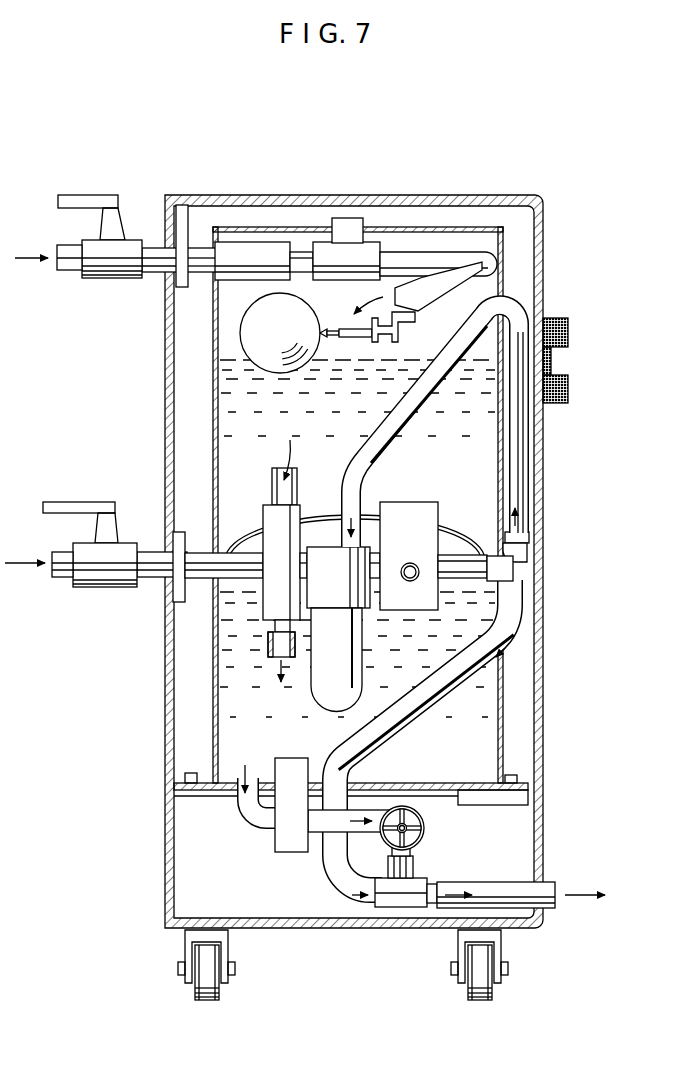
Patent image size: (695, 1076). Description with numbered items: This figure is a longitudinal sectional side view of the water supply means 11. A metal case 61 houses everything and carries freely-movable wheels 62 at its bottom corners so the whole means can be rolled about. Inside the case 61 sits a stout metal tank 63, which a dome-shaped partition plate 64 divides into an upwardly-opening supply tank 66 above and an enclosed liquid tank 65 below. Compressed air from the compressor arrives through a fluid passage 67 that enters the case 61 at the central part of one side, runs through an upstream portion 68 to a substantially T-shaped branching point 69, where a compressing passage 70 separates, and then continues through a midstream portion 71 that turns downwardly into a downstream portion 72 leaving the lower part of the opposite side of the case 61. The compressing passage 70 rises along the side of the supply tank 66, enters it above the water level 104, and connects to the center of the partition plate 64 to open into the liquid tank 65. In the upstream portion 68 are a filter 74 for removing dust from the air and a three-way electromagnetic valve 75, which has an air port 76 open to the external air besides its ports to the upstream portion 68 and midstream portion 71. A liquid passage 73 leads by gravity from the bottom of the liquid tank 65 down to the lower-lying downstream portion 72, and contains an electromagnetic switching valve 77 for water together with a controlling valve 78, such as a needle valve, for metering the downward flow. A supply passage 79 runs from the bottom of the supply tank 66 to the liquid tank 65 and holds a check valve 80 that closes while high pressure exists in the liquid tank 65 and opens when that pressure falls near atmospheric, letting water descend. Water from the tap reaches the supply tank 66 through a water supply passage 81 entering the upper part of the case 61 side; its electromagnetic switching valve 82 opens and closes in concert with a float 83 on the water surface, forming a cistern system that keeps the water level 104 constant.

The water supply means 11 is at (494, 194).
The metal case 61 is at (538, 487).
The freely-movable wheels 62 is at (205, 1002).
The tank 63 is at (500, 712).
The dome-shaped partition plate 64 is at (325, 512).
The liquid tank 65 is at (477, 752).
The supply tank 66 is at (222, 398).
The fluid passage 67 is at (61, 577).
The upstream portion 68 is at (248, 585).
The branching point 69 is at (505, 578).
The compressing passage 70 is at (513, 442).
The midstream portion 71 is at (432, 694).
The downstream portion 72 is at (402, 898).
The liquid passage 73 is at (253, 828).
The filter 74 is at (362, 628).
The three-way electromagnetic valve 75 is at (424, 503).
The air port 76 is at (492, 608).
The electromagnetic switching valve 77 is at (285, 848).
The controlling valve 78 is at (425, 828).
The supply passage 79 is at (272, 490).
The check valve 80 is at (270, 520).
The water supply passage 81 is at (75, 262).
The electromagnetic switching valve 82 is at (368, 244).
The float 83 is at (240, 323).
The water level 104 is at (384, 356).